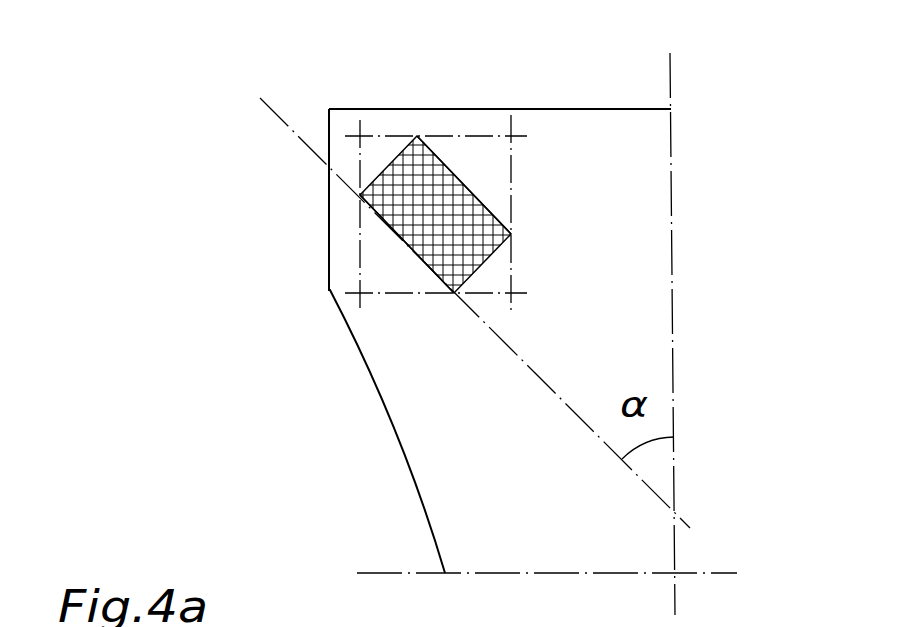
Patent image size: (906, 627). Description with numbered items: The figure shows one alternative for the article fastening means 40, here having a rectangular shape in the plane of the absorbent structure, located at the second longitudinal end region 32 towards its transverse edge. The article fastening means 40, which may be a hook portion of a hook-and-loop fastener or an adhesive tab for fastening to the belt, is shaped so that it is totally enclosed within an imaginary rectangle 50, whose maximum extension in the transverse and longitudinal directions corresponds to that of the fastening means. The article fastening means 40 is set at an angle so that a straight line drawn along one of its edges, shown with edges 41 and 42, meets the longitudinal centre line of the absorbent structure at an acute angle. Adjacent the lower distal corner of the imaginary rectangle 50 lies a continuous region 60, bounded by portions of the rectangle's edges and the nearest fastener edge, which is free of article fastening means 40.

The second longitudinal end region 32 is at (515, 440).
The article fastening means 40 is at (376, 152).
The first side wall of recess 41 is at (403, 246).
The second side wall of recess 42 is at (443, 163).
The imaginary rectangle 50 is at (524, 193).
The continuous region 60 is at (403, 276).